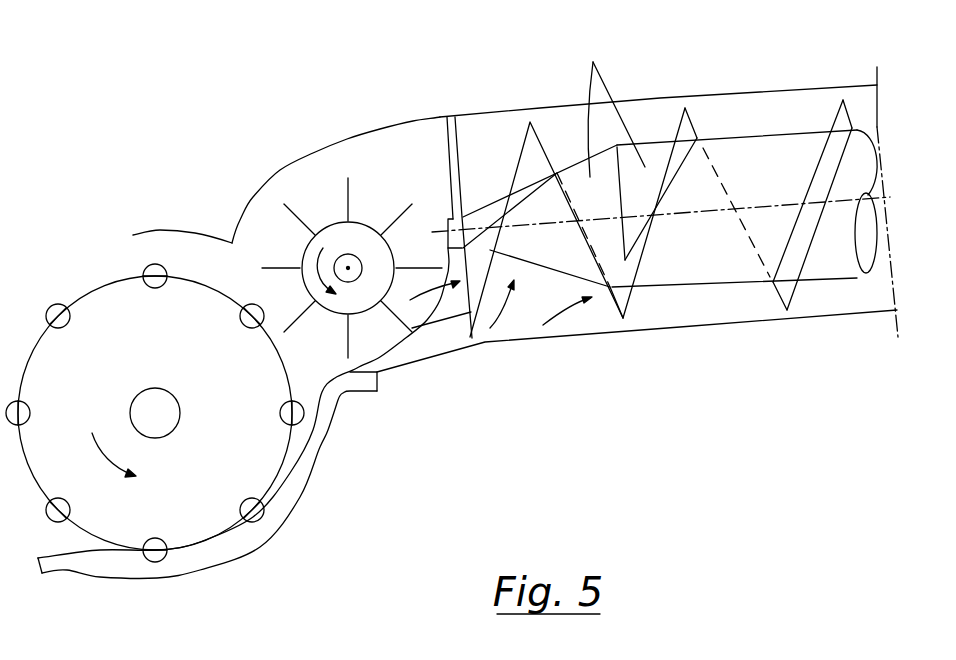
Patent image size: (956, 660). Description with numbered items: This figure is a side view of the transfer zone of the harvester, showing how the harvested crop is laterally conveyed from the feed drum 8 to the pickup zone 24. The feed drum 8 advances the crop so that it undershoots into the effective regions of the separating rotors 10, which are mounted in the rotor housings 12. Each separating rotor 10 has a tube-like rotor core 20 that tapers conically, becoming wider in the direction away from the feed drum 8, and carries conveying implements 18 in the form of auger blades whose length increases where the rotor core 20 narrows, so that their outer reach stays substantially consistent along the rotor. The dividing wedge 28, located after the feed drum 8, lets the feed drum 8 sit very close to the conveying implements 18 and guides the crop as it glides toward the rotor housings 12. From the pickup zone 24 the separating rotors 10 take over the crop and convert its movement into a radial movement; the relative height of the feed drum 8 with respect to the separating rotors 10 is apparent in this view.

The feed drum 8 is at (331, 229).
The separating rotor 10 is at (778, 185).
The rotor housing 12 is at (798, 86).
The conveying implement 18 is at (692, 106).
The rotor core 20 is at (610, 97).
The pickup zone 24 is at (547, 358).
The dividing wedge 28 is at (418, 345).